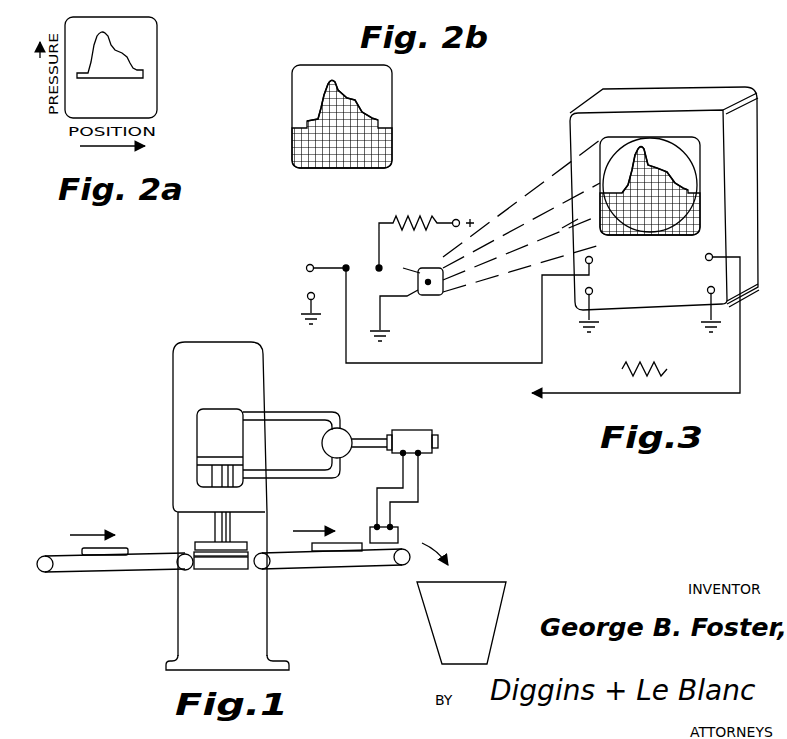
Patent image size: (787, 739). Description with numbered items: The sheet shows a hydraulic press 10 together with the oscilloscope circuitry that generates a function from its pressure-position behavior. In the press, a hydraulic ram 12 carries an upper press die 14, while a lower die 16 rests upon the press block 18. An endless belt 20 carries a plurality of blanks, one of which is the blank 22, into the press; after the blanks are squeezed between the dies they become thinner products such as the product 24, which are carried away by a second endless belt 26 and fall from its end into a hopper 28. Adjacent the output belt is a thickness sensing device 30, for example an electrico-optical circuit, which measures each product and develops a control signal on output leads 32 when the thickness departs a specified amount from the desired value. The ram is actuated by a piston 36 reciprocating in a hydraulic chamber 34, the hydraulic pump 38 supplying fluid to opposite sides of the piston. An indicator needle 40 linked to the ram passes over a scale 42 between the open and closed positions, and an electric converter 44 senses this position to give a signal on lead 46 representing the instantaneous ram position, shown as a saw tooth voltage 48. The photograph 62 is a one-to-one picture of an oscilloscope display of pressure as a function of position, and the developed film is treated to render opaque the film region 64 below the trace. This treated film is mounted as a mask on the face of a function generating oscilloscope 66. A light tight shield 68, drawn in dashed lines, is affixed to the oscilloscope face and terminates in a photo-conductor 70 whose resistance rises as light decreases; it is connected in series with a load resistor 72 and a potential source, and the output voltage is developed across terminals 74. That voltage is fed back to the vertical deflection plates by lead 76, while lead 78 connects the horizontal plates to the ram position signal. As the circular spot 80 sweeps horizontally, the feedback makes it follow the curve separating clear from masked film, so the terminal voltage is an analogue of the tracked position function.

In FIG. 1, the hydraulic press 10 is at (168, 381).
In FIG. 1, the hydraulic ram 12 is at (214, 524).
In FIG. 1, the upper press die 14 is at (197, 545).
In FIG. 1, the lower die 16 is at (252, 550).
In FIG. 1, the press block 18 is at (228, 566).
In FIG. 1, the endless belt 20 is at (118, 572).
In FIG. 1, the blank 22 is at (78, 552).
In FIG. 1, the product 24 is at (345, 541).
In FIG. 1, the second endless belt 26 is at (333, 566).
In FIG. 1, the hopper 28 is at (437, 622).
In FIG. 1, the thickness sensing device 30 is at (400, 534).
In FIG. 1, the output leads 32 is at (421, 488).
In FIG. 1, the hydraulic chamber 34 is at (197, 431).
In FIG. 1, the piston 36 is at (197, 459).
In FIG. 1, the hydraulic pump 38 is at (346, 429).
In FIG. 1, the indicator needle 40 is at (292, 412).
In FIG. 1, the scale 42 is at (291, 469).
In FIG. 1, the electric converter 44 is at (369, 448).
In FIG. 1, the lead 46 is at (419, 430).
In FIG. 3, the saw tooth voltage 48 is at (670, 392).
In FIG. 2A, the photograph 62 is at (140, 50).
In FIG. 2B, the photograph 62 is at (305, 88).
In FIG. 3, the photograph 62 is at (699, 152).
In FIG. 2B, the film region 64 is at (308, 143).
In FIG. 3, the function generating oscilloscope 66 is at (657, 287).
In FIG. 3, the light tight shield 68 is at (545, 180).
In FIG. 3, the photo-conductor 70 is at (412, 293).
In FIG. 3, the load resistor 72 is at (420, 217).
In FIG. 3, the terminals 74 is at (308, 285).
In FIG. 3, the lead 76 is at (453, 363).
In FIG. 3, the lead 78 is at (595, 395).
In FIG. 3, the circular spot 80 is at (556, 228).